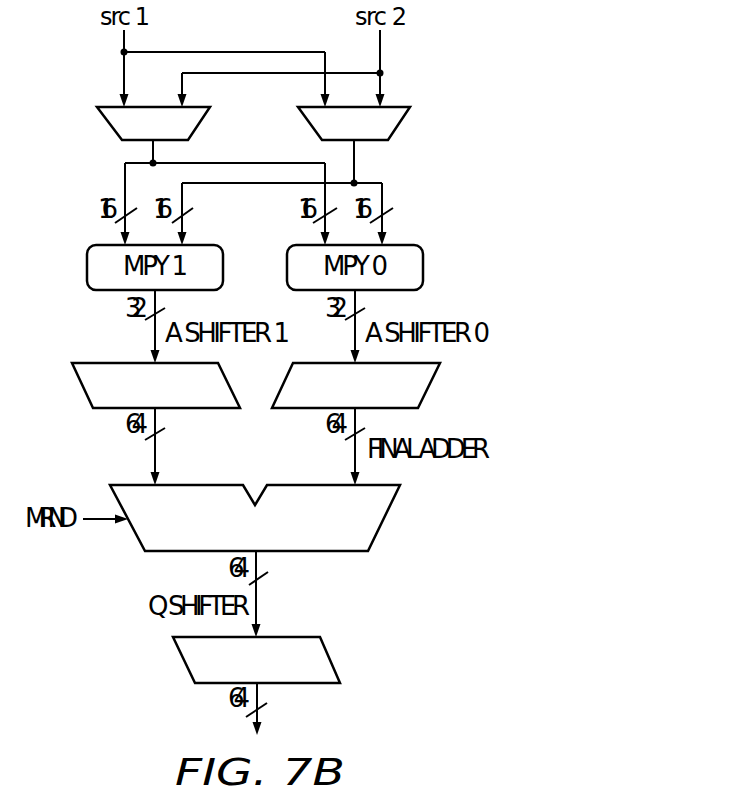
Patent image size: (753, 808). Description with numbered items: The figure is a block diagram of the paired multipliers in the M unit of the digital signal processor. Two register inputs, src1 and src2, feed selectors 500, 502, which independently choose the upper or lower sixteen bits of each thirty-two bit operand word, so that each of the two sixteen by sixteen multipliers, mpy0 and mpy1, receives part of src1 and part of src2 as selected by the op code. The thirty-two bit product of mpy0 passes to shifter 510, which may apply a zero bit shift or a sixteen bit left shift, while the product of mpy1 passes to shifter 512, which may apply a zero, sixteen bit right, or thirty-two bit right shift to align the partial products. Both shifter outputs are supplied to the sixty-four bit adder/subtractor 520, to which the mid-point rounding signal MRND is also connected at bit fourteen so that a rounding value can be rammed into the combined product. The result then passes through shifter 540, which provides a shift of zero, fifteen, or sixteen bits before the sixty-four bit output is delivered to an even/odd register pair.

The selector 500 is at (402, 120).
The selector 502 is at (111, 126).
The shifter 510 is at (432, 380).
The shifter 512 is at (84, 388).
The adder/subtractor 520 is at (385, 515).
The shifter 540 is at (184, 660).